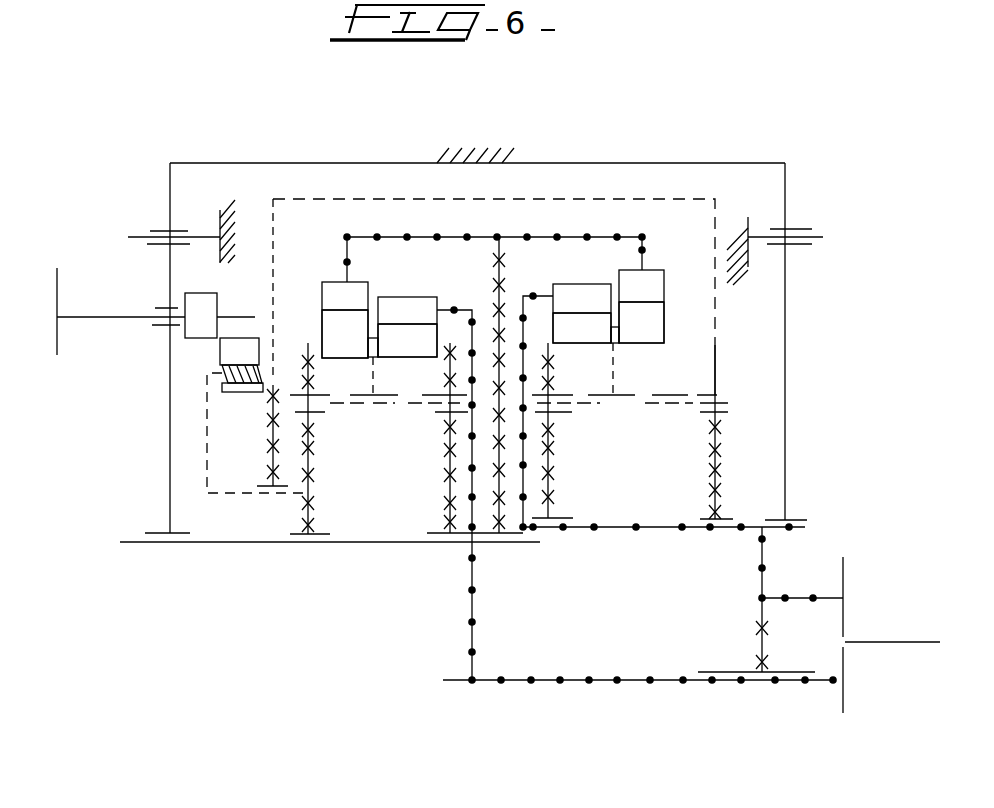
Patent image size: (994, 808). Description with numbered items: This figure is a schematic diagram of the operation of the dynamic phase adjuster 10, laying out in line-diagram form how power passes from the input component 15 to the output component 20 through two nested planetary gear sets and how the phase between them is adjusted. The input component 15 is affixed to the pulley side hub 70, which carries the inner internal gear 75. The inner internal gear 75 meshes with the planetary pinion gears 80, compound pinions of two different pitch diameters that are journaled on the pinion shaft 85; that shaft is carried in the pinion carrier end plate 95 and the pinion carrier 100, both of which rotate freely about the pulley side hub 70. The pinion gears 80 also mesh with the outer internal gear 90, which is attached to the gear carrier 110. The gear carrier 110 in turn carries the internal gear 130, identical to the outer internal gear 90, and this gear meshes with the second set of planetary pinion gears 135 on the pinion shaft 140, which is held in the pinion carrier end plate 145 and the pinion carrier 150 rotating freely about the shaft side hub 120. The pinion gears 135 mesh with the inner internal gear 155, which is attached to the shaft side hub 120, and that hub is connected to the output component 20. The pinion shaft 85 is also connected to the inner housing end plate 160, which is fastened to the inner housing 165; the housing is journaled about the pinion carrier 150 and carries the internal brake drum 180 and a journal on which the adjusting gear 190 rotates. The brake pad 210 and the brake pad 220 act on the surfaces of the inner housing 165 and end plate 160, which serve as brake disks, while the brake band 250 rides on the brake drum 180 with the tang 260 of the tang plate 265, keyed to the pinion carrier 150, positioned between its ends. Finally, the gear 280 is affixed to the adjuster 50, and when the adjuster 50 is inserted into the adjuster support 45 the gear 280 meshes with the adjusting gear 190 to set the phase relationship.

The dynamic phase adjuster 10 is at (604, 83).
The input component 15 is at (893, 552).
The output component 20 is at (531, 680).
The adjuster support 45 is at (162, 325).
The adjuster 50 is at (57, 278).
The pulley side hub 70 is at (762, 556).
The inner internal gear 75 is at (594, 309).
The planetary pinion gears 80 is at (594, 337).
The pinion shaft 85 is at (613, 404).
The outer internal gear 90 is at (654, 296).
The pinion carrier end plate 95 is at (552, 497).
The pinion carrier 100 is at (717, 450).
The gear carrier 110 is at (512, 237).
The shaft side hub 120 is at (472, 600).
The internal gear 130 is at (362, 304).
The second set of planetary pinion gears 135 is at (362, 344).
The pinion shaft 140 is at (372, 402).
The pinion carrier end plate 145 is at (448, 503).
The pinion carrier 150 is at (310, 445).
The inner internal gear 155 is at (424, 321).
The inner housing end plate 160 is at (716, 355).
The inner housing 165 is at (362, 199).
The internal brake drum 180 is at (245, 390).
The adjusting gear 190 is at (220, 350).
The brake pad 210 is at (228, 195).
The brake pad 220 is at (746, 222).
The brake band 250 is at (283, 350).
The tang 260 is at (213, 383).
The tang plate 265 is at (207, 458).
The gear 280 is at (218, 278).